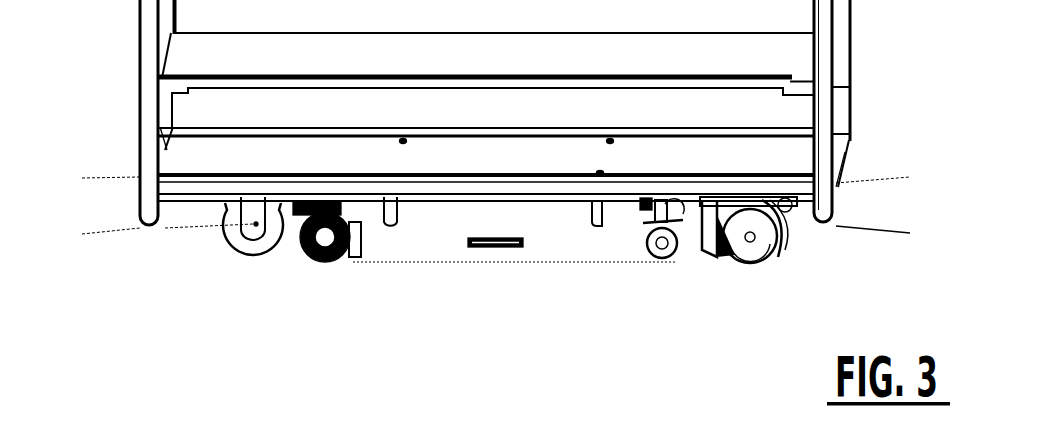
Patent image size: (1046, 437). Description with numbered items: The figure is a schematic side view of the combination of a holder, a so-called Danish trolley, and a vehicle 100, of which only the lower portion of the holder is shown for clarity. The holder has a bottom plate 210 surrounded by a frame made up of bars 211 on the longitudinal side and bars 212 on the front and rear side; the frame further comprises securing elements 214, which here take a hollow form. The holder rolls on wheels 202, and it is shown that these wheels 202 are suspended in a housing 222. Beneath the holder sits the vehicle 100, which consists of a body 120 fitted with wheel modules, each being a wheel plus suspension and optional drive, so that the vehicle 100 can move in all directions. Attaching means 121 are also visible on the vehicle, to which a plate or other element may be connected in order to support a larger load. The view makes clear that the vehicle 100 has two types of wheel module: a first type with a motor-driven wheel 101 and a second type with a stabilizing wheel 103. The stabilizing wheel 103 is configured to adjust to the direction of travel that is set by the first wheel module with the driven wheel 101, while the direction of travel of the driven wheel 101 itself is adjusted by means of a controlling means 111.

The vehicle 100 is at (430, 279).
The motor-driven wheel 101 is at (312, 255).
The stabilizing wheel 103 is at (652, 243).
The controlling means 111 is at (349, 262).
The body 120 is at (483, 250).
The attaching means 121 is at (570, 226).
The rear wheels 202 is at (741, 254).
The bottom plate 210 is at (798, 157).
The bars on the longitudinal side 211 is at (174, 188).
The bars on the front and rear side 212 is at (167, 137).
The securing elements 214 is at (152, 198).
The housing 222 is at (762, 210).